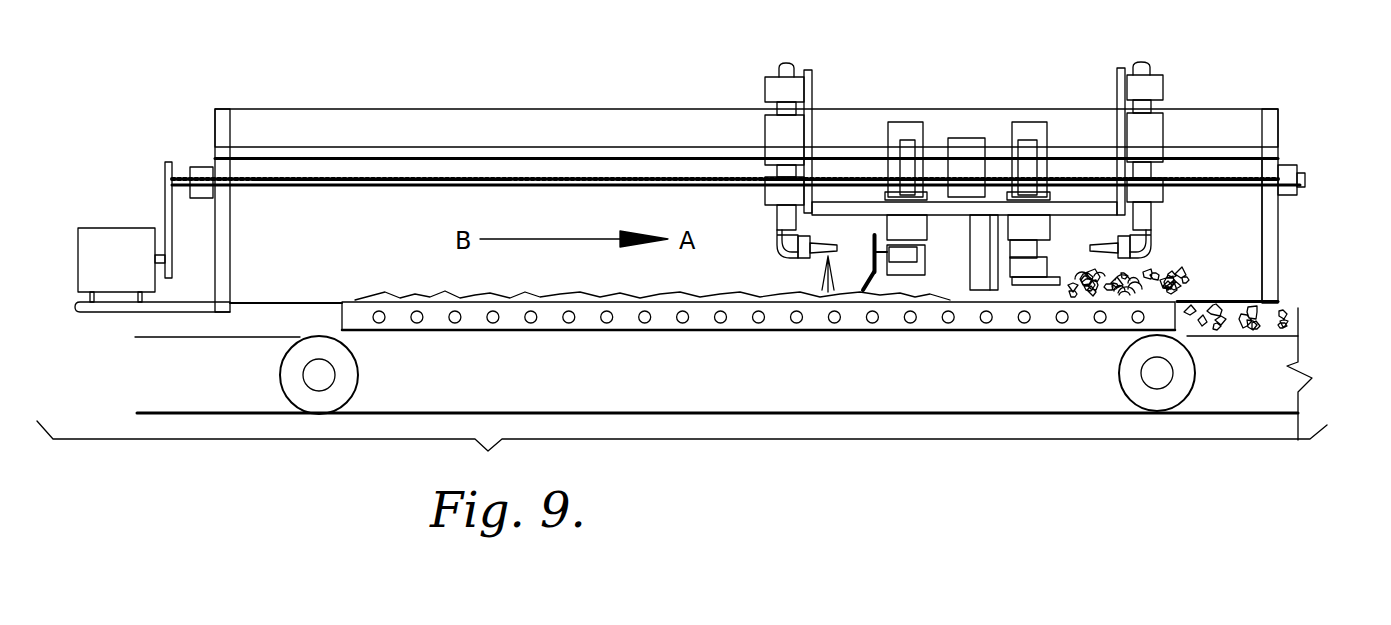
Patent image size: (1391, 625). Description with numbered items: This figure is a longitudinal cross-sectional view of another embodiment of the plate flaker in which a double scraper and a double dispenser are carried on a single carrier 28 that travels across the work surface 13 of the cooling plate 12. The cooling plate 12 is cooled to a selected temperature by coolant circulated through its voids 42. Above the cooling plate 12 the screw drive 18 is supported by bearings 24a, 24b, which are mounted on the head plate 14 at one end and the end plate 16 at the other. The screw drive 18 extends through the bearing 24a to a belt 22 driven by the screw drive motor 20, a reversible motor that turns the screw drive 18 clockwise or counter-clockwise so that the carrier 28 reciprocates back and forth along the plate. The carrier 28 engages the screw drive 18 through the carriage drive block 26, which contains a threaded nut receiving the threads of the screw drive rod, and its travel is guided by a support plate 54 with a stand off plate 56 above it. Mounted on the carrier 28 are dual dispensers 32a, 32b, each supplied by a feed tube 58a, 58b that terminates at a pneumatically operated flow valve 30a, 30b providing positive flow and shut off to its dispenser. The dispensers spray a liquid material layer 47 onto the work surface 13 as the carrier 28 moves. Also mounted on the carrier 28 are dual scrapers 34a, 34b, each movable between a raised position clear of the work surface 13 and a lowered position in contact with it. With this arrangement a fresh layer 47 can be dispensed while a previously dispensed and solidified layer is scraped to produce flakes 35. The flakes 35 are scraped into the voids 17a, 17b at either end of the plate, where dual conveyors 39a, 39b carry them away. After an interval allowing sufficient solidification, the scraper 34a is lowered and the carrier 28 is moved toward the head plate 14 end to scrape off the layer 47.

The cooling plate 12 is at (578, 323).
The work surface 13 is at (333, 302).
The head plate 14 is at (223, 302).
The end plate 16 is at (1268, 272).
The void 17a is at (300, 318).
The void 17b is at (1238, 314).
The screw drive 18 is at (337, 177).
The screw drive motor 20 is at (120, 240).
The belt 22 is at (165, 215).
The bearing 24a is at (200, 178).
The bearing 24b is at (1290, 167).
The carriage drive block 26 is at (948, 175).
The carriage 28 is at (855, 207).
The flow valve 30a is at (790, 133).
The flow valve 30b is at (1137, 128).
The dispenser 32a is at (813, 258).
The dispenser 32b is at (1108, 247).
The scraper 34a is at (883, 268).
The scraper 34b is at (1052, 278).
The flakes 35 is at (1185, 245).
The conveyor 39a is at (310, 396).
The conveyor 39b is at (1145, 393).
The voids 42 is at (610, 322).
The liquid material layer 47 is at (700, 295).
The support plate 54 is at (1205, 152).
The stand off plate 56 is at (484, 117).
The feed tube 58a is at (776, 90).
The feed tube 58b is at (1138, 83).